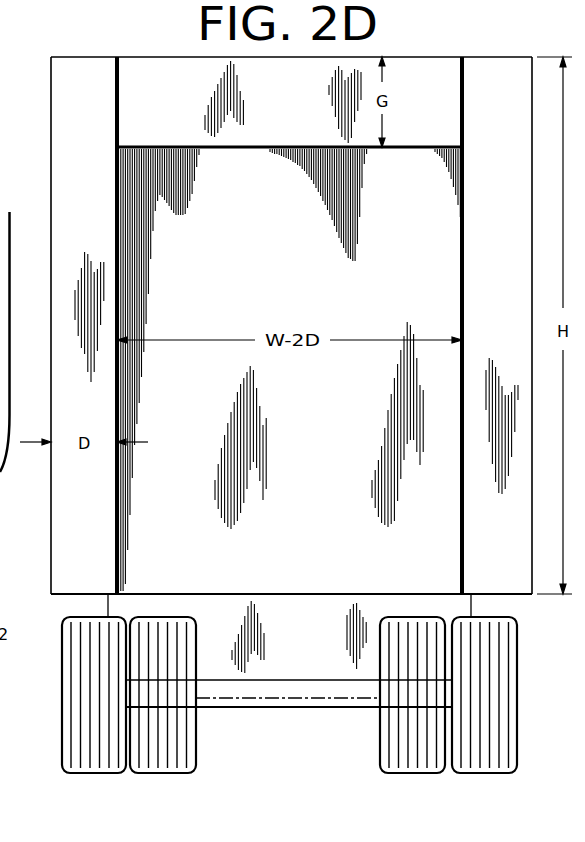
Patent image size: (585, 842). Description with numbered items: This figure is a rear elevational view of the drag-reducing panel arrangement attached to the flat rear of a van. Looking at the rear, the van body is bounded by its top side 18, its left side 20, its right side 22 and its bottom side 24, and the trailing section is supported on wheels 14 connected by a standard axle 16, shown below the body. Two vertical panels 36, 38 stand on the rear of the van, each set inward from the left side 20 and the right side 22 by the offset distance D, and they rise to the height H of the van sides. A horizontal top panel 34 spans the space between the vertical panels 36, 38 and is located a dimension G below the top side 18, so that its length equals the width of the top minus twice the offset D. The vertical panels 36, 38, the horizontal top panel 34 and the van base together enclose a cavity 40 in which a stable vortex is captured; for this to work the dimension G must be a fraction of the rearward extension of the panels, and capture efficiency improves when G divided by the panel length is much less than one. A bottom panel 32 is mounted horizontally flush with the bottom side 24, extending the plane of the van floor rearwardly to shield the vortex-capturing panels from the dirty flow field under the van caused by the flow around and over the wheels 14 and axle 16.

The wheels 14 is at (63, 700).
The axle 16 is at (257, 709).
The top side 18 is at (447, 57).
The left side 20 is at (51, 133).
The right side 22 is at (532, 326).
The bottom side 24 is at (293, 597).
The bottom panel 32 is at (257, 594).
The top panel 34 is at (249, 148).
The left side panel 36 is at (93, 203).
The right side panel 38 is at (508, 200).
The cavity 40 is at (293, 99).